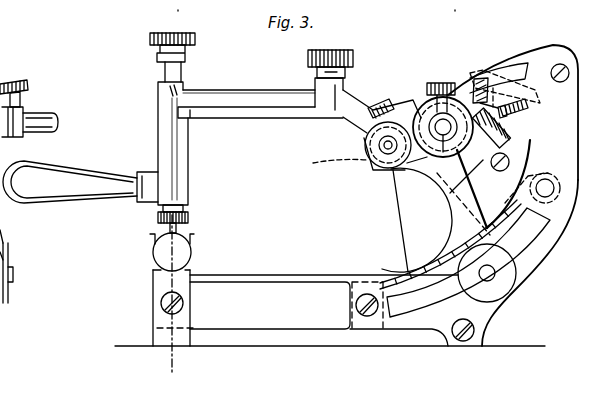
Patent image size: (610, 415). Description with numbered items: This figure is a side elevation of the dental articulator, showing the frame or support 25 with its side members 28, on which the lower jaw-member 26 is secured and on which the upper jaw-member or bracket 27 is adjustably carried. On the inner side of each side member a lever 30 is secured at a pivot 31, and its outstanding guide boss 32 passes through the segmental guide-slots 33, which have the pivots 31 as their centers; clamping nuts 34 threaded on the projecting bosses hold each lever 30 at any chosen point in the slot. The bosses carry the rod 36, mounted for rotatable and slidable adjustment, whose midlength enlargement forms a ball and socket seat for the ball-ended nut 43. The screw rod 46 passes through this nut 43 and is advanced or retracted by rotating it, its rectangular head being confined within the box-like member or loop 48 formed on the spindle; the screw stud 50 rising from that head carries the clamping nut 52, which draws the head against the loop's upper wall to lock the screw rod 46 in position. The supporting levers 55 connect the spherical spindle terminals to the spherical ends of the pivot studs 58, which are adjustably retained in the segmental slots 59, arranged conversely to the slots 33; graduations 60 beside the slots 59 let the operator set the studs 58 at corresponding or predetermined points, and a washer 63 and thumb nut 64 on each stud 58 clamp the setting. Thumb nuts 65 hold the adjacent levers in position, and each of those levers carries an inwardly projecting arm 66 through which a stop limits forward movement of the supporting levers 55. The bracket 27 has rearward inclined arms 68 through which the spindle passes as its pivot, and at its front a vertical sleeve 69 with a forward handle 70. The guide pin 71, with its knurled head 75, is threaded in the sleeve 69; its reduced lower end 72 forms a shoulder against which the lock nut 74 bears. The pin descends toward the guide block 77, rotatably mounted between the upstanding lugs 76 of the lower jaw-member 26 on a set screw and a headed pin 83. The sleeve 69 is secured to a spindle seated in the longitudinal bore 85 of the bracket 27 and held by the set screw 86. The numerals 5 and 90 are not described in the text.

The axis line 5 is at (188, 232).
The frame or support 25 is at (578, 156).
The lower jaw-member 26 is at (243, 277).
The upper jaw-member or bracket 27 is at (259, 118).
The side members 28 is at (518, 99).
The lever 30 is at (420, 203).
The pivot 31 is at (556, 188).
The guide boss 32 is at (7, 138).
The segmental guide-slots 33 is at (505, 73).
The clamping nuts 34 is at (393, 175).
The rod 36 is at (455, 152).
The nut 43 is at (496, 128).
The screw rod 46 is at (527, 107).
The box-like member or loop 48 is at (367, 137).
The screw stud 50 is at (382, 102).
The clamping nut 52 is at (428, 98).
The supporting levers 55 is at (14, 231).
The pivot studs 58 is at (492, 274).
The segmental slots 59 is at (527, 238).
The graduations 60 is at (438, 228).
The washer 63 is at (6, 256).
The thumb nut 64 is at (496, 293).
The thumb nuts 65 is at (368, 160).
The inwardly projecting arm 66 is at (328, 170).
The inclined arms 68 is at (350, 133).
The sleeve 69 is at (178, 158).
The handle 70 is at (98, 182).
The guide pin 71 is at (168, 228).
The reduced lower end 72 is at (186, 229).
The lock nut 74 is at (190, 216).
The knurled head 75 is at (150, 40).
The lugs or ears 76 is at (153, 272).
The guide block 77 is at (152, 236).
The headed pin 83 is at (173, 270).
The longitudinal bore 85 is at (185, 5).
The set screw 86 is at (308, 58).
The part 90 is at (461, 7).